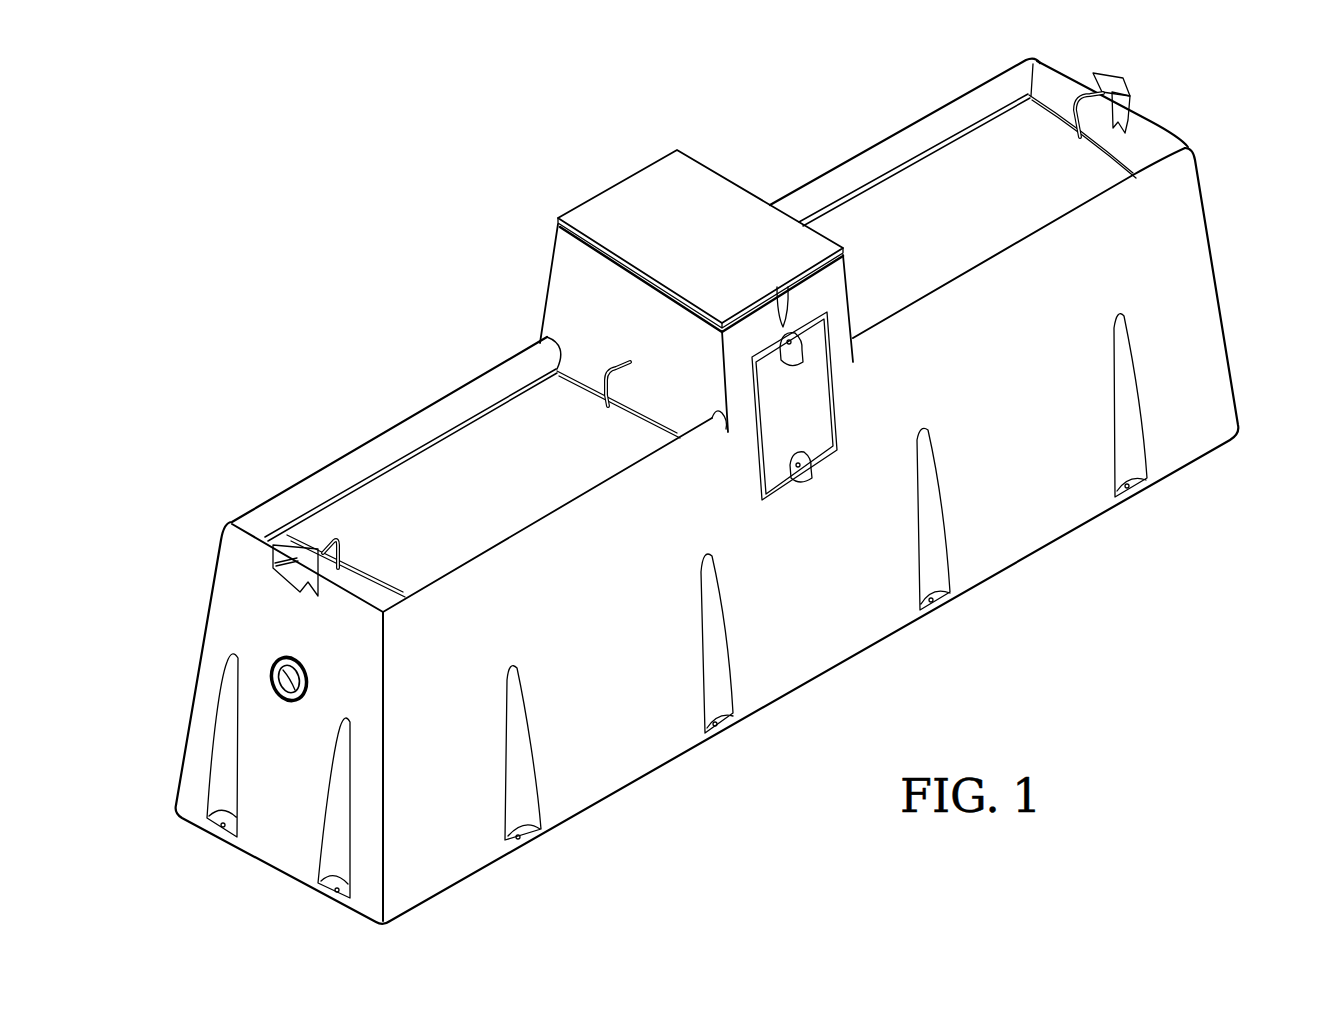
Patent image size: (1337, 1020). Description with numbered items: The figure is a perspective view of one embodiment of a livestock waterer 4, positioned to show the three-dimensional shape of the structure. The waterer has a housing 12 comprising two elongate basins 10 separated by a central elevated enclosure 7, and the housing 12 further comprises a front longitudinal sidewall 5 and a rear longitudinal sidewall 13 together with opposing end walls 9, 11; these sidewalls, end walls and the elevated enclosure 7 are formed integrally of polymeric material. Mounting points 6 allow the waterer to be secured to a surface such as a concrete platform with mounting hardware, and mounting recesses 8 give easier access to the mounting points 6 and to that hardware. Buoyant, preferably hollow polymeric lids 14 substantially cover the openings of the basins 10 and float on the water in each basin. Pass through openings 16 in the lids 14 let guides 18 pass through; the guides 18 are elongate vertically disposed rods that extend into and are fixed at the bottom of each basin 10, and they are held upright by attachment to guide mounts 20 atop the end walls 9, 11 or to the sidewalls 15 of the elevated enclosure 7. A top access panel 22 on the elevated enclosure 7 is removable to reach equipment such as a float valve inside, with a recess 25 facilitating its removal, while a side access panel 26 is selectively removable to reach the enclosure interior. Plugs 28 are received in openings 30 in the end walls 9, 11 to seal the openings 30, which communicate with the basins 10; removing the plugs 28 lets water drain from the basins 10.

The livestock waterer 4 is at (1249, 231).
The front longitudinal sidewall 5 is at (1190, 405).
The mounting points 6 is at (548, 812).
The elevated enclosure 7 is at (565, 278).
The mounting recesses 8 is at (718, 678).
The end wall 9 is at (1228, 356).
The basins 10 is at (330, 497).
The end wall 11 is at (232, 583).
The housing 12 is at (835, 625).
The rear longitudinal sidewall 13 is at (953, 100).
The lids 14 is at (428, 488).
The sidewalls of elevated enclosure 15 is at (673, 330).
The pass through openings 16 is at (345, 572).
The guides 18 is at (613, 367).
The guide mounts 20 is at (1123, 104).
The top access panel 22 is at (690, 193).
The recess 25 is at (781, 302).
The side access panel 26 is at (805, 398).
The plugs 28 is at (278, 683).
The openings 30 is at (280, 695).